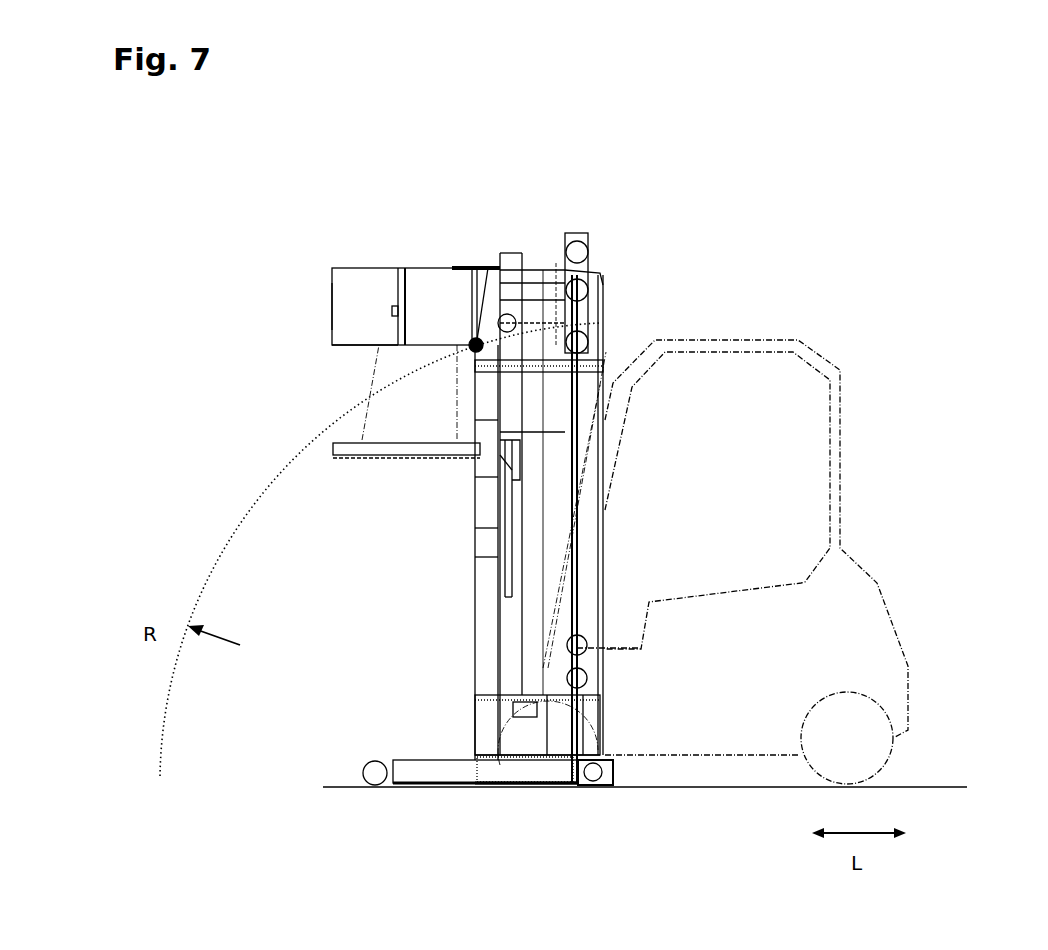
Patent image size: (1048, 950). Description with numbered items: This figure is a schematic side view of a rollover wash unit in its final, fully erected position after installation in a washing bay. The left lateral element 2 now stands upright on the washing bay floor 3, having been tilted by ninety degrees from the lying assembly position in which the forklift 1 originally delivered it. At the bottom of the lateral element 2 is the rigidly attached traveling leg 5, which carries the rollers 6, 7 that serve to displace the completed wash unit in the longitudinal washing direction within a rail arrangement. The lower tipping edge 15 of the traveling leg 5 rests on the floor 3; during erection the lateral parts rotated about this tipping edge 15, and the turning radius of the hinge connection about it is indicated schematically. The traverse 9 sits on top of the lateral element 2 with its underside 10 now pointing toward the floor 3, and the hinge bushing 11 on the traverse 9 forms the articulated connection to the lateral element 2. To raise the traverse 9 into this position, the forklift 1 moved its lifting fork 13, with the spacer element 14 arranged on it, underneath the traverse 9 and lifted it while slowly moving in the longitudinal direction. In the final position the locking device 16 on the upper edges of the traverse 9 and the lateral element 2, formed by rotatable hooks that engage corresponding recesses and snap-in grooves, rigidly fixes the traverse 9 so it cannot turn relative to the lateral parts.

The forklift 1 is at (815, 562).
The left lateral element 2 is at (494, 508).
The washing bay floor 3 is at (674, 830).
The traveling leg 5 is at (474, 790).
The roller 6 is at (333, 767).
The roller 7 is at (551, 800).
The traverse 9 is at (342, 269).
The underside 10 is at (318, 306).
The hinge bushing 11 is at (511, 277).
The lifting fork 13 is at (341, 401).
The spacer element 14 is at (291, 392).
The lower tipping edge 15 is at (632, 815).
The locking device 16 is at (477, 265).